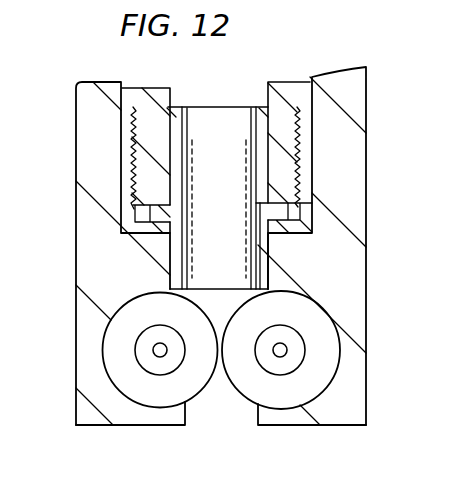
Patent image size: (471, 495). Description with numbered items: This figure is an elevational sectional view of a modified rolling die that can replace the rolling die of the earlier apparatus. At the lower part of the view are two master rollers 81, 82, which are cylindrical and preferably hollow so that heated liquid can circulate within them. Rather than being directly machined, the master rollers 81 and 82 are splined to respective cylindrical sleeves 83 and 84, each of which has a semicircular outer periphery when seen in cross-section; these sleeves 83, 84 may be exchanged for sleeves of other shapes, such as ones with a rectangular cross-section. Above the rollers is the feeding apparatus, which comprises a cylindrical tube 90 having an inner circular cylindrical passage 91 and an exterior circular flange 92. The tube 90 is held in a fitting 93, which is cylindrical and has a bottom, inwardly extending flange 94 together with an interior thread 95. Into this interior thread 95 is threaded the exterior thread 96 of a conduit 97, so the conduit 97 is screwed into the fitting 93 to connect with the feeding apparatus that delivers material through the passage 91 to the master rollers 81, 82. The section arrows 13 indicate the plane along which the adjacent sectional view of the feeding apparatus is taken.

The section line 13 is at (402, 275).
The master roller 81 is at (152, 333).
The master roller 82 is at (273, 331).
The cylindrical sleeve 83 is at (163, 400).
The cylindrical sleeve 84 is at (260, 392).
The cylindrical tube 90 is at (229, 190).
The inner circular cylindrical passage 91 is at (182, 240).
The exterior circular flange 92 is at (155, 213).
The fitting 93 is at (127, 194).
The inwardly extending flange 94 is at (148, 231).
The interior thread 95 is at (132, 140).
The exterior thread 96 is at (131, 122).
The conduit 97 is at (158, 94).